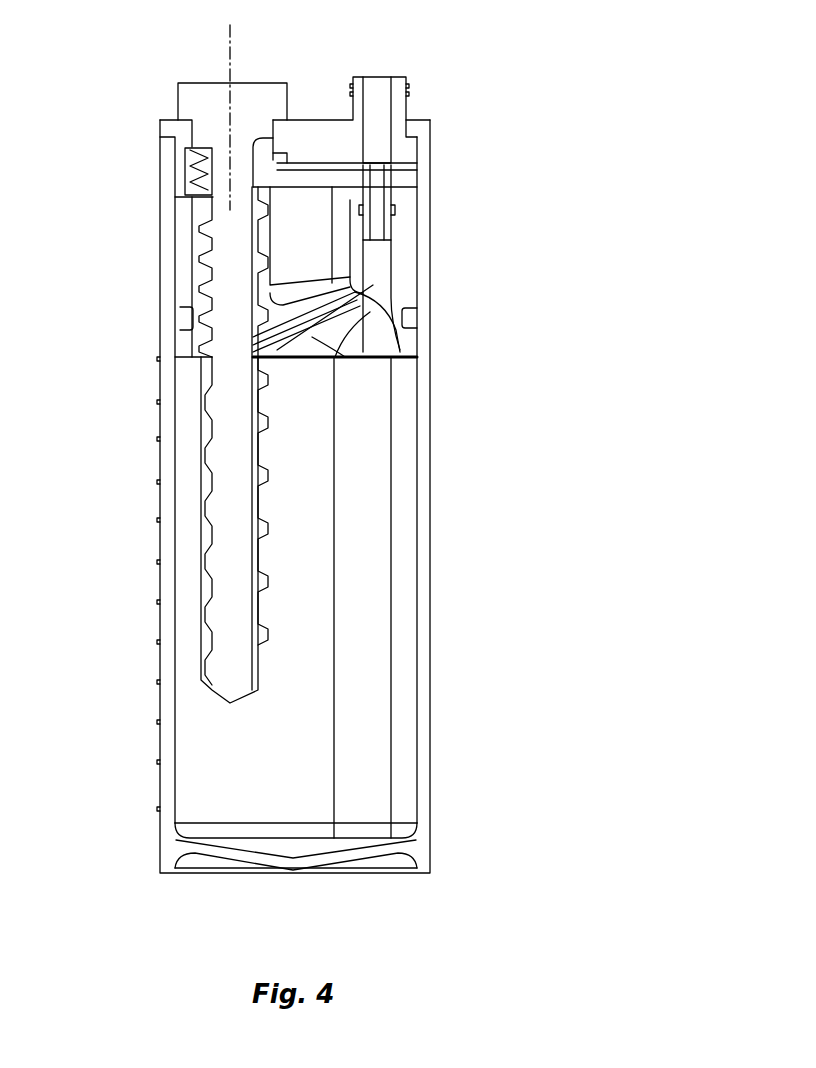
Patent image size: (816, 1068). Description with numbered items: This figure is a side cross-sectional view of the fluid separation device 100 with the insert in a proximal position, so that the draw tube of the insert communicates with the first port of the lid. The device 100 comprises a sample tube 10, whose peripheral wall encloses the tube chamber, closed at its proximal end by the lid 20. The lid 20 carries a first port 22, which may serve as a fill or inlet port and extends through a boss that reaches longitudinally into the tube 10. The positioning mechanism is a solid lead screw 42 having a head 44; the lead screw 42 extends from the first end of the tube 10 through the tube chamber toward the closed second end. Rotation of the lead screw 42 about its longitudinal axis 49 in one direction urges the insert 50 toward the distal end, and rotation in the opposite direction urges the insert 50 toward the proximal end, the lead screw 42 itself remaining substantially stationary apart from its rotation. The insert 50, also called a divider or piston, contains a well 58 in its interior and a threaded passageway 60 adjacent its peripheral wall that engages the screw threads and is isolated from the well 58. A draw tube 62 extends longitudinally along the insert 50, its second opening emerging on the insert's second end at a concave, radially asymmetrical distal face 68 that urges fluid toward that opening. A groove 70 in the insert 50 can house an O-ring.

The fluid separation device 100 is at (550, 129).
The sample tube 10 is at (420, 578).
The lid 20 is at (413, 128).
The first port 22 is at (380, 197).
The lead screw 42 is at (217, 540).
The head 44 is at (197, 103).
The longitudinal axis 49 is at (228, 68).
The insert 50 is at (190, 214).
The well 58 is at (307, 222).
The passageway 60 is at (212, 265).
The draw tube 62 is at (378, 255).
The distal face 68 is at (312, 337).
The groove 70 is at (410, 318).